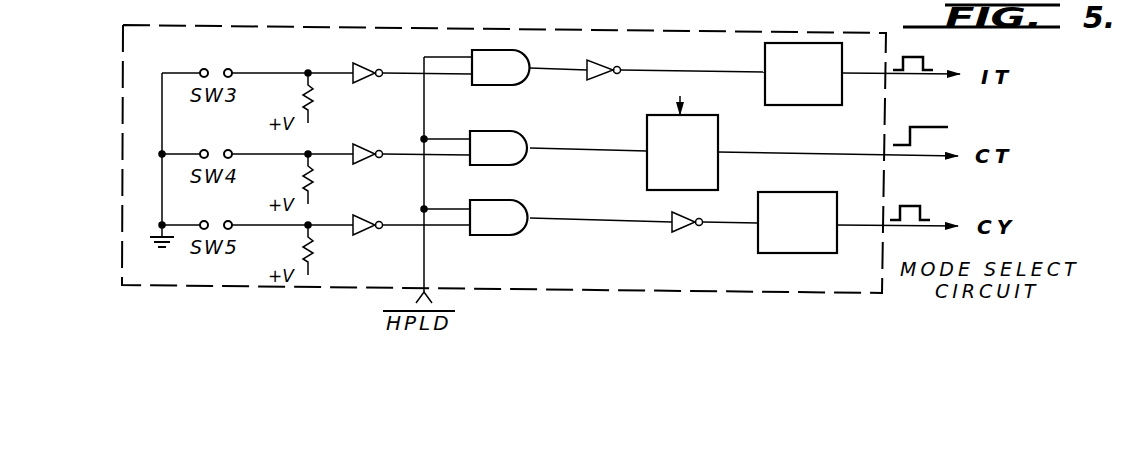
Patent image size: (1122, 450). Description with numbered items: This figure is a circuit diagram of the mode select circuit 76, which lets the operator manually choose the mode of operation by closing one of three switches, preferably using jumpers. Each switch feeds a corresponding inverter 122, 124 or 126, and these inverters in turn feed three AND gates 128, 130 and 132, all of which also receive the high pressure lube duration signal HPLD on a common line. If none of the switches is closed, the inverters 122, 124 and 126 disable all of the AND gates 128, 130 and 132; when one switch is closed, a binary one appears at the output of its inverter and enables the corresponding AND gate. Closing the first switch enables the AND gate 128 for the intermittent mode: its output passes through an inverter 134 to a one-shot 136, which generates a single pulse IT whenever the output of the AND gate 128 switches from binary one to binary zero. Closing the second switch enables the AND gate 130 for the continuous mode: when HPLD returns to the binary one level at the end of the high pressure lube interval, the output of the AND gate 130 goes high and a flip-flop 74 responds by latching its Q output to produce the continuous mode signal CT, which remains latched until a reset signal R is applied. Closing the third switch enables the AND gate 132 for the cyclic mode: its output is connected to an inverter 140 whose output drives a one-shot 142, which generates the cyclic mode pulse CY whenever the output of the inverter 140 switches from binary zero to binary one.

The mode select circuit 76 is at (122, 157).
The inverter 122 is at (360, 83).
The inverter 124 is at (360, 164).
The inverter 126 is at (360, 235).
The AND gate 128 is at (481, 86).
The AND gate 130 is at (481, 166).
The AND gate 132 is at (481, 236).
The inverter 134 is at (602, 81).
The one-shot 136 is at (781, 107).
The flip-flop 74 is at (642, 173).
The inverter 140 is at (672, 230).
The one-shot 142 is at (823, 255).